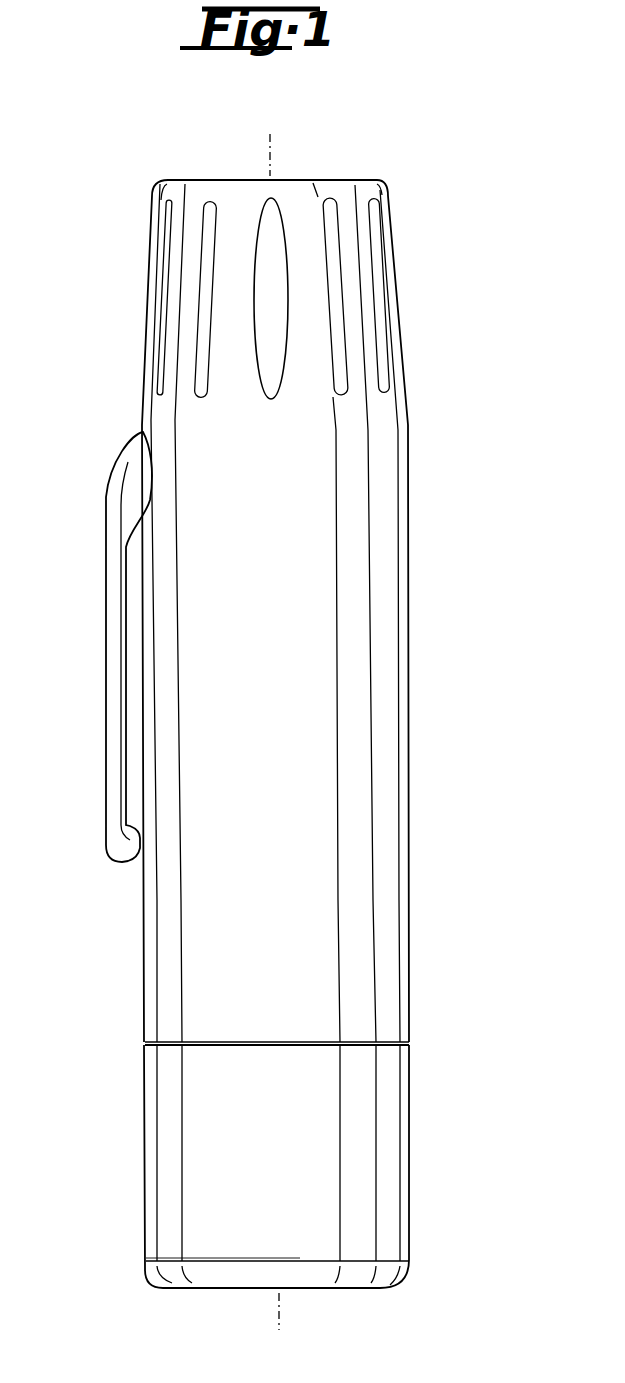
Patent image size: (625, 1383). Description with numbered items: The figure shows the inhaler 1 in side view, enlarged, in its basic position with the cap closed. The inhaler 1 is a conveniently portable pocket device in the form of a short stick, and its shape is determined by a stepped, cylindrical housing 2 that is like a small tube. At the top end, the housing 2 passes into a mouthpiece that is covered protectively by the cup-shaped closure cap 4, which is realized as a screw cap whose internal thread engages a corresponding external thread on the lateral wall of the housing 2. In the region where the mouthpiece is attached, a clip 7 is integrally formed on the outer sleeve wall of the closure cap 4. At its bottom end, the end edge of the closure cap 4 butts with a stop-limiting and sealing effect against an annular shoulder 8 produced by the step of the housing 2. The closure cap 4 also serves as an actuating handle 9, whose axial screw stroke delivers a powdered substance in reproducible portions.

The inhaler 1 is at (153, 137).
The cylindrical housing 2 is at (390, 1172).
The closure cap 4 is at (344, 195).
The clip 7 is at (118, 584).
The annular shoulder 8 is at (390, 1043).
The actuating handle 9 is at (192, 257).